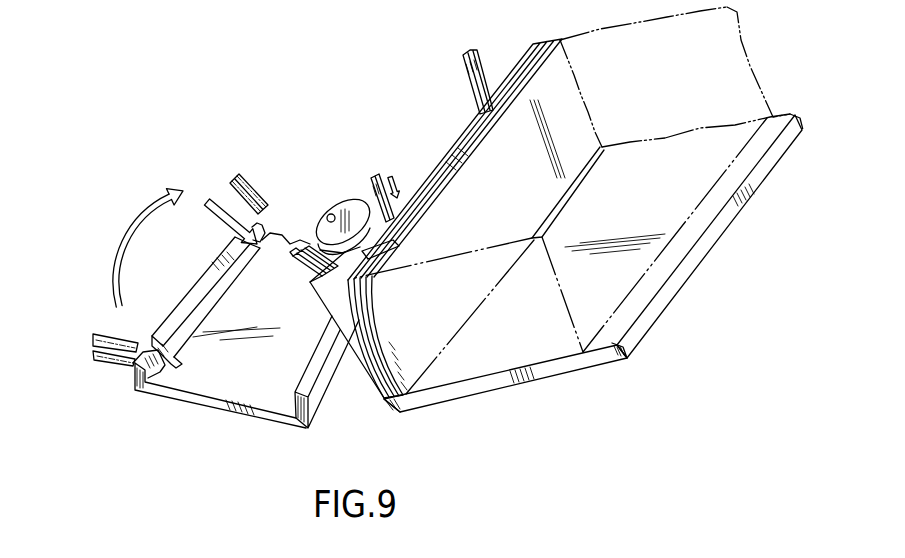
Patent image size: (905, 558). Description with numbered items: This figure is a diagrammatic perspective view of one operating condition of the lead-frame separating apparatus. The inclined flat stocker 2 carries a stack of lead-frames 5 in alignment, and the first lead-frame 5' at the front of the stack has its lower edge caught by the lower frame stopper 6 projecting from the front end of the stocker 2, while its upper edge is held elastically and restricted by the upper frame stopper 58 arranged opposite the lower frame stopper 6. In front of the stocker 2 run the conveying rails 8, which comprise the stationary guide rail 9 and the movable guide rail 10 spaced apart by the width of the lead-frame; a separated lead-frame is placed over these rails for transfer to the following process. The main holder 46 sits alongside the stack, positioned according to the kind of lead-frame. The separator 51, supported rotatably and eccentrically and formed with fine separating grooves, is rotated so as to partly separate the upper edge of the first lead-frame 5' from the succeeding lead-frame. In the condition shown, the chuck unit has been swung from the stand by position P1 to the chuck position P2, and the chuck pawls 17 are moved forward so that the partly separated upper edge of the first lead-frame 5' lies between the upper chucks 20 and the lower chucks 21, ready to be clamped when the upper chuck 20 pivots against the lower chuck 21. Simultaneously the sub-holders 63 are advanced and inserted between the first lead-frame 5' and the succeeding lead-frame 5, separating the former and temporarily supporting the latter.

The stocker 2 is at (480, 387).
The lead-frame 5 is at (455, 218).
The first lead-frame 5' is at (341, 325).
The lower frame stopper 6 is at (382, 403).
The conveying rails 8 is at (213, 406).
The stationary guide rail 9 is at (312, 378).
The movable guide rail 10 is at (191, 296).
The chuck pawl 17 is at (312, 240).
The upper chuck 20 is at (297, 258).
The lower chuck 21 is at (310, 282).
The main holder 46 is at (465, 88).
The separator 51 is at (350, 200).
The upper frame stopper 58 is at (399, 246).
The sub-holder 63 is at (378, 174).
The stand by position P1 is at (105, 328).
The chuck position P2 is at (257, 172).